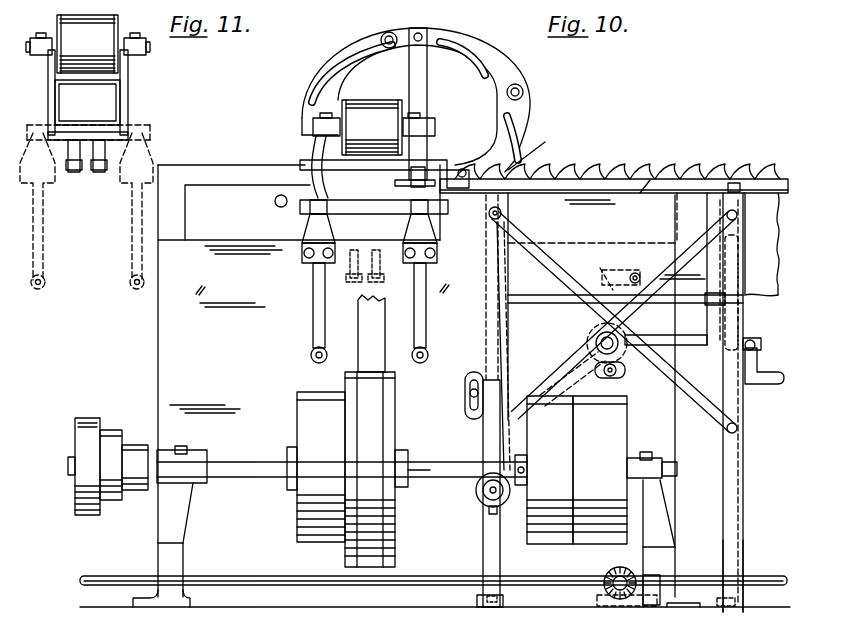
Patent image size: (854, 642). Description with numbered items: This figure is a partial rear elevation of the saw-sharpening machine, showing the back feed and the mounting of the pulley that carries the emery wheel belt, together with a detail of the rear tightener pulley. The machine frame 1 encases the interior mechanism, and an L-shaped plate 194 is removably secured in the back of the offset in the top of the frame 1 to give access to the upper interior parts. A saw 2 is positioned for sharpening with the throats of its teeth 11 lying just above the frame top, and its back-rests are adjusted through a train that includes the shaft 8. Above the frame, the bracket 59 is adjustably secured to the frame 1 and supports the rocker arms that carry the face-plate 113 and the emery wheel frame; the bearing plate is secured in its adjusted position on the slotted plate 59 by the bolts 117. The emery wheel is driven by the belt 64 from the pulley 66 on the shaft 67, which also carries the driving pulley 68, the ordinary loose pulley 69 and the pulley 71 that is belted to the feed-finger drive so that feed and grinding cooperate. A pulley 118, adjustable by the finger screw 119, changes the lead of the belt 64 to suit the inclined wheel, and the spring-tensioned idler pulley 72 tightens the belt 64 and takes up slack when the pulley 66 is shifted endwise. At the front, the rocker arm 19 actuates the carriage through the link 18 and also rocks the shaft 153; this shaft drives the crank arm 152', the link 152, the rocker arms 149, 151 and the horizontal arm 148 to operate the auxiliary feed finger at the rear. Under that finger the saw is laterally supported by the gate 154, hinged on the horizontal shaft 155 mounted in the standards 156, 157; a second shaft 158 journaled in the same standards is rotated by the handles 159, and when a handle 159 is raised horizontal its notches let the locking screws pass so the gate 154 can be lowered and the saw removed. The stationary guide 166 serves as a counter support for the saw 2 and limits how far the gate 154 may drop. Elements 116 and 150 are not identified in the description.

In FIG. 10, the machine frame 1 is at (173, 340).
In FIG. 10, the saw 2 is at (758, 284).
In FIG. 10, the shaft 8 is at (233, 581).
In FIG. 10, the saw teeth 11 is at (646, 175).
In FIG. 10, the link 18 is at (615, 272).
In FIG. 10, the rocker arm 19 is at (628, 320).
In FIG. 10, the bracket 59 is at (333, 58).
In FIG. 10, the belt 64 is at (367, 336).
In FIG. 10, the pulley 66 is at (396, 400).
In FIG. 10, the shaft 67 is at (452, 470).
In FIG. 10, the pulley 68 is at (544, 470).
In FIG. 10, the loose pulley 69 is at (625, 470).
In FIG. 10, the pulley 71 is at (88, 497).
In FIG. 11, the idler pulley 72 is at (107, 28).
In FIG. 10, the face-plate 113 is at (437, 33).
In FIG. 10, the slot 116 is at (368, 47).
In FIG. 10, the bolts 117 is at (390, 34).
In FIG. 10, the pulley 118 is at (358, 113).
In FIG. 10, the finger screw 119 is at (396, 183).
In FIG. 10, the horizontal arm 148 is at (538, 149).
In FIG. 10, the rocker arm 149 is at (488, 265).
In FIG. 10, the crank disc 150 is at (487, 503).
In FIG. 10, the rocker arm 151 is at (470, 372).
In FIG. 10, the link 152 is at (614, 322).
In FIG. 10, the crank arm 152' is at (617, 342).
In FIG. 10, the shaft 153 is at (619, 370).
In FIG. 10, the gate 154 is at (745, 181).
In FIG. 10, the horizontal shaft 155 is at (583, 303).
In FIG. 10, the standard 156 is at (501, 565).
In FIG. 10, the standard 157 is at (732, 551).
In FIG. 10, the shaft 158 is at (685, 340).
In FIG. 10, the handle 159 is at (760, 386).
In FIG. 10, the stationary guide 166 is at (645, 190).
In FIG. 10, the L-shaped plate 194 is at (247, 212).